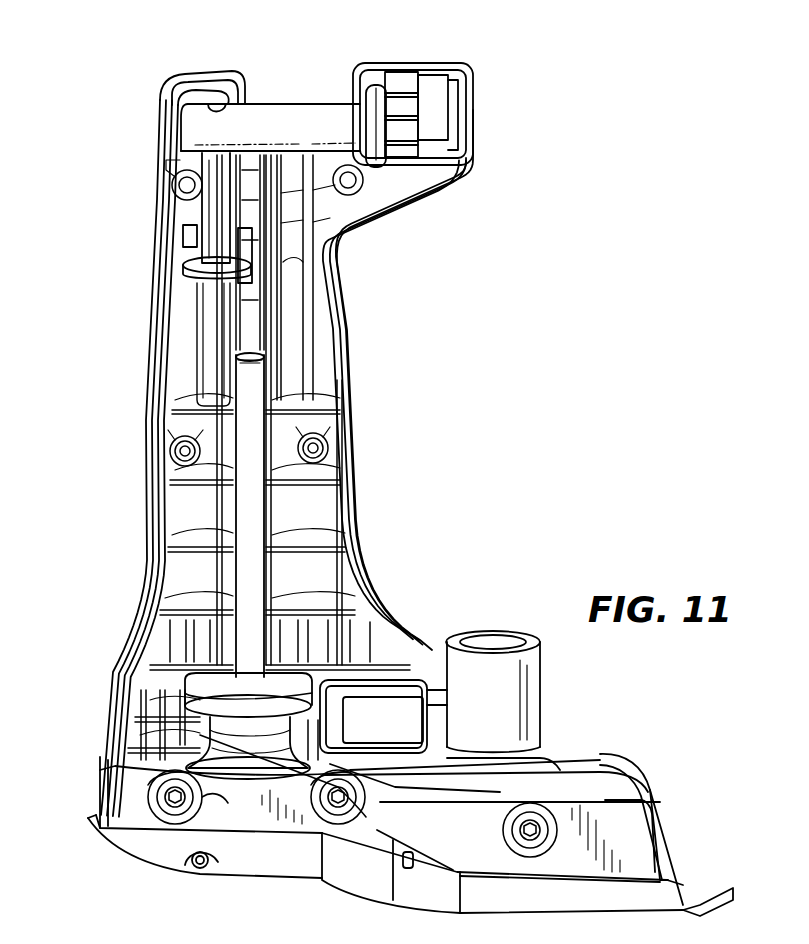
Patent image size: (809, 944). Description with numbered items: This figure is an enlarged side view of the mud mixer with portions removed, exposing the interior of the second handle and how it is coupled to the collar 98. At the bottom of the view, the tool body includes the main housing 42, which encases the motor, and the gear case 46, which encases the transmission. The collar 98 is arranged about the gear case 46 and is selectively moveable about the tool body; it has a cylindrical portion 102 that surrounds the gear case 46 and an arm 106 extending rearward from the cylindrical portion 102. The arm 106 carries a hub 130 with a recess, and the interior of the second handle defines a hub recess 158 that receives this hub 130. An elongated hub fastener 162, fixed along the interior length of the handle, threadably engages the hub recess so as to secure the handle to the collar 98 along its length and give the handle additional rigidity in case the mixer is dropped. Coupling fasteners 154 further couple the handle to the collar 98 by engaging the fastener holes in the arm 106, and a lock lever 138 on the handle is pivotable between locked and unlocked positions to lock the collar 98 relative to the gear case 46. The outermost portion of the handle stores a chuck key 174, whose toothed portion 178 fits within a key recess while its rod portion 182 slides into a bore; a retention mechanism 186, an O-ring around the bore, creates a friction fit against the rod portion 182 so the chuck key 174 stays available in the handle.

The chuck key 174 is at (272, 76).
The toothed portion 178 is at (400, 118).
The rod portion 182 is at (218, 192).
The retention mechanism 186 is at (218, 285).
The hub fastener 162 is at (247, 498).
The hub 130 is at (225, 690).
The hub recess 158 is at (200, 728).
The arm 106 is at (232, 812).
The coupling fasteners 154 is at (370, 832).
The lock lever 138 is at (440, 712).
The collar 98 is at (698, 783).
The cylindrical portion 102 is at (655, 885).
The main housing 42 is at (172, 850).
The gear case 46 is at (355, 868).